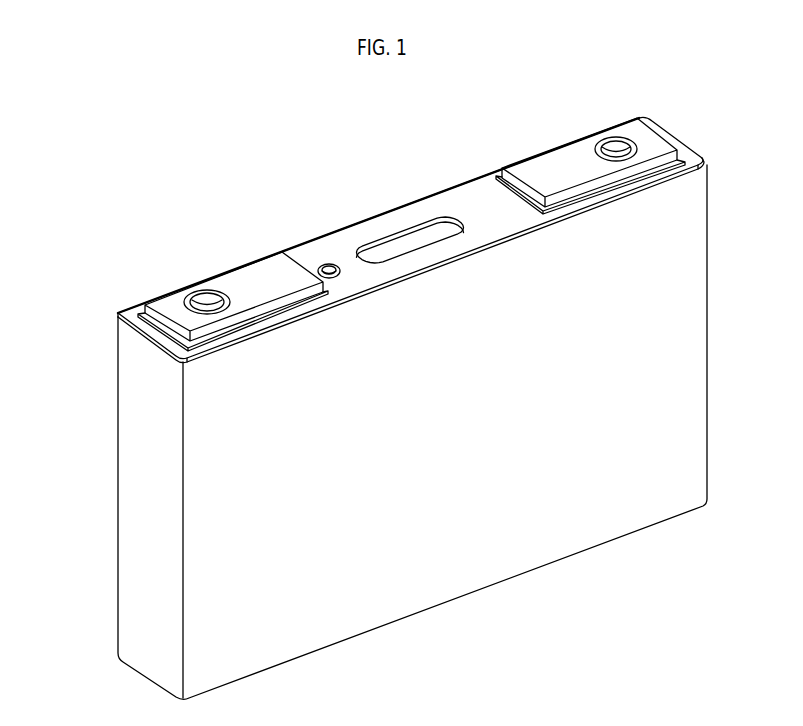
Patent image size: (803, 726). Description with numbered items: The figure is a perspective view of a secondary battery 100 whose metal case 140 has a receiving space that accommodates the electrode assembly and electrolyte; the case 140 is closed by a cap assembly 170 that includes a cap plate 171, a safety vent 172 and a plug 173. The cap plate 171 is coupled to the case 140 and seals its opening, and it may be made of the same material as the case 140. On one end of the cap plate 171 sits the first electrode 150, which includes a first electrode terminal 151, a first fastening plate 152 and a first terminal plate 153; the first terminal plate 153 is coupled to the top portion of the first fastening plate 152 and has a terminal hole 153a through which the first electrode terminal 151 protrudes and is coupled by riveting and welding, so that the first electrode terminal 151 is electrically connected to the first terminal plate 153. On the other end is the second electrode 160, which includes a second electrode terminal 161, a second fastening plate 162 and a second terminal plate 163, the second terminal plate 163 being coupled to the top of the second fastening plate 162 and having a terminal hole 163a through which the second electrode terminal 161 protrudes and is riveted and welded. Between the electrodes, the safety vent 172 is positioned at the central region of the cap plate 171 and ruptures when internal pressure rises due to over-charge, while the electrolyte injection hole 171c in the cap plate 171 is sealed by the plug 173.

The secondary battery 100 is at (58, 120).
The case 140 is at (130, 467).
The first electrode 150 is at (132, 288).
The first electrode terminal 151 is at (188, 296).
The first fastening plate 152 is at (130, 319).
The first terminal plate 153 is at (255, 268).
The terminal hole 153a is at (230, 293).
The second electrode 160 is at (509, 148).
The second electrode terminal 161 is at (615, 142).
The second fastening plate 162 is at (680, 158).
The second terminal plate 163 is at (562, 155).
The terminal hole 163a is at (638, 152).
The cap assembly 170 is at (434, 184).
The cap plate 171 is at (477, 192).
The electrolyte injection hole 171c is at (318, 268).
The safety vent 172 is at (418, 235).
The plug 173 is at (333, 263).